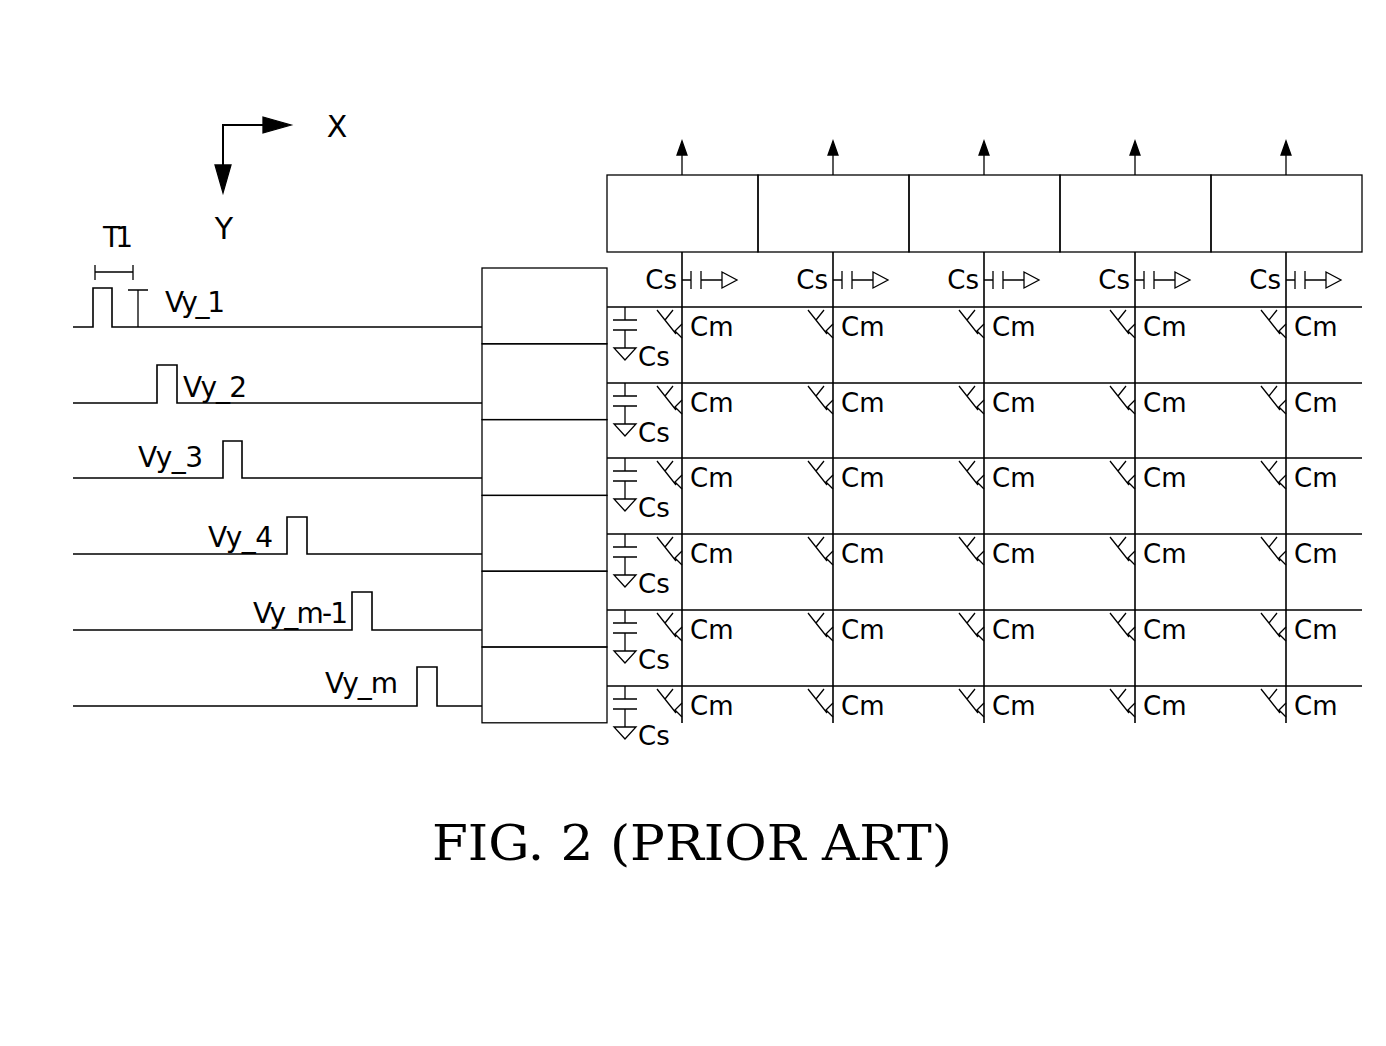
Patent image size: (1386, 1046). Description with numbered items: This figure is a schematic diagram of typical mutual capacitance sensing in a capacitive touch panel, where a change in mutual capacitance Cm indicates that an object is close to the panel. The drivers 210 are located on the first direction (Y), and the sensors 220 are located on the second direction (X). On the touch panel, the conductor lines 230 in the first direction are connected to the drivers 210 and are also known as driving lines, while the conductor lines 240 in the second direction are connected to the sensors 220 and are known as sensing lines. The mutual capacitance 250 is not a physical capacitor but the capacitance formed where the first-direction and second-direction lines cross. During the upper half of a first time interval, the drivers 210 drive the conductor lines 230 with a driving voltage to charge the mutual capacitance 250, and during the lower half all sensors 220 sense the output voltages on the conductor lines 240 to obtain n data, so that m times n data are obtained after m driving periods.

The driver 210 is at (496, 493).
The sensor 220 is at (955, 176).
The conductor line in the first direction 230 is at (645, 307).
The conductor line in the second direction 240 is at (682, 723).
The mutual capacitance 250 is at (668, 330).